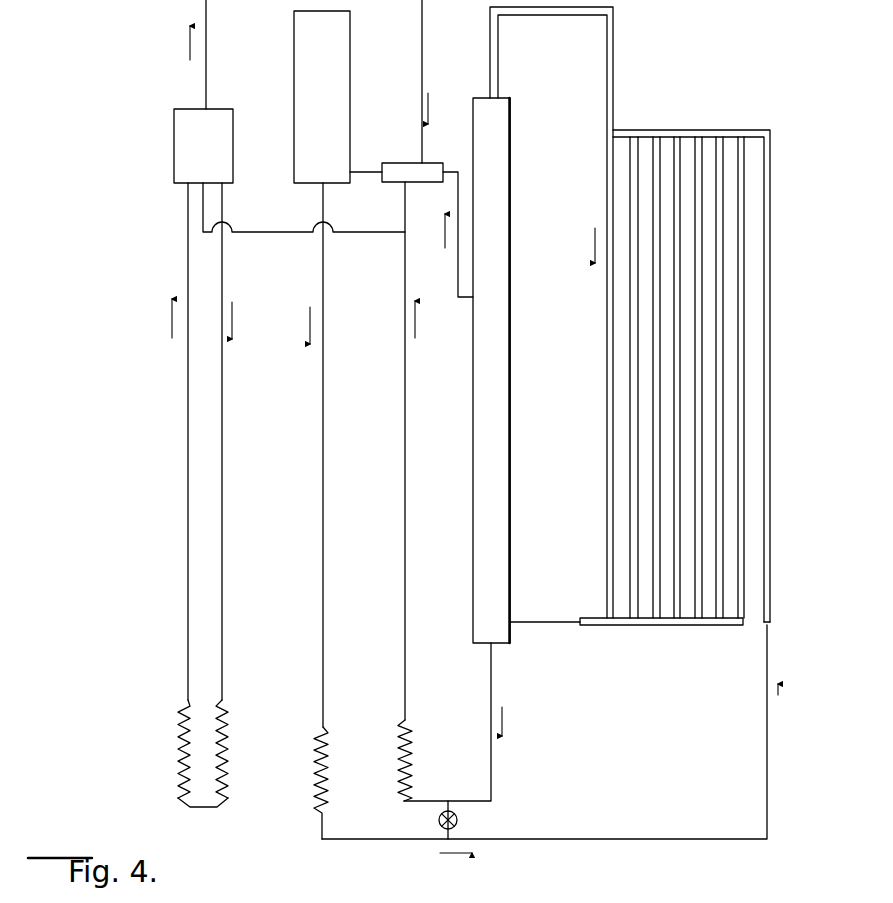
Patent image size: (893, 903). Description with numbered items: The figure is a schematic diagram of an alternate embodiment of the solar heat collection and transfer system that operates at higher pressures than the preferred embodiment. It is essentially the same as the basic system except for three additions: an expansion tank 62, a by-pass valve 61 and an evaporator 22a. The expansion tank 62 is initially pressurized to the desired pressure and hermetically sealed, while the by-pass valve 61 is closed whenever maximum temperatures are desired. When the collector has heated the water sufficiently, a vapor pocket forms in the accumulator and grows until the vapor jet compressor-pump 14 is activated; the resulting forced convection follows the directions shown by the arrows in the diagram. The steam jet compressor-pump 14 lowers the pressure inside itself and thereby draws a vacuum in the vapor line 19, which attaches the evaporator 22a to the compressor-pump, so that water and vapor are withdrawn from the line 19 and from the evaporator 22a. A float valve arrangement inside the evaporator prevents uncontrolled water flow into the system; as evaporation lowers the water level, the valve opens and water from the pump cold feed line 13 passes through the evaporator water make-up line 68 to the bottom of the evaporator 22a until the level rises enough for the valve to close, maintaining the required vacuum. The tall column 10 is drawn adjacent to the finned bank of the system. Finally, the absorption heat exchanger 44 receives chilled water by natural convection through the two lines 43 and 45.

The column 10 is at (507, 363).
The pump cold feed line 13 is at (405, 202).
The vapor jet compressor-pump 14 is at (396, 165).
The vapor line 19 is at (424, 52).
The evaporator 22a is at (178, 157).
The line 43 is at (223, 592).
The absorption heat exchanger 44 is at (228, 783).
The line 45 is at (188, 591).
The by-pass valve 61 is at (458, 818).
The expansion tank 62 is at (305, 53).
The evaporator water make-up line 68 is at (272, 233).